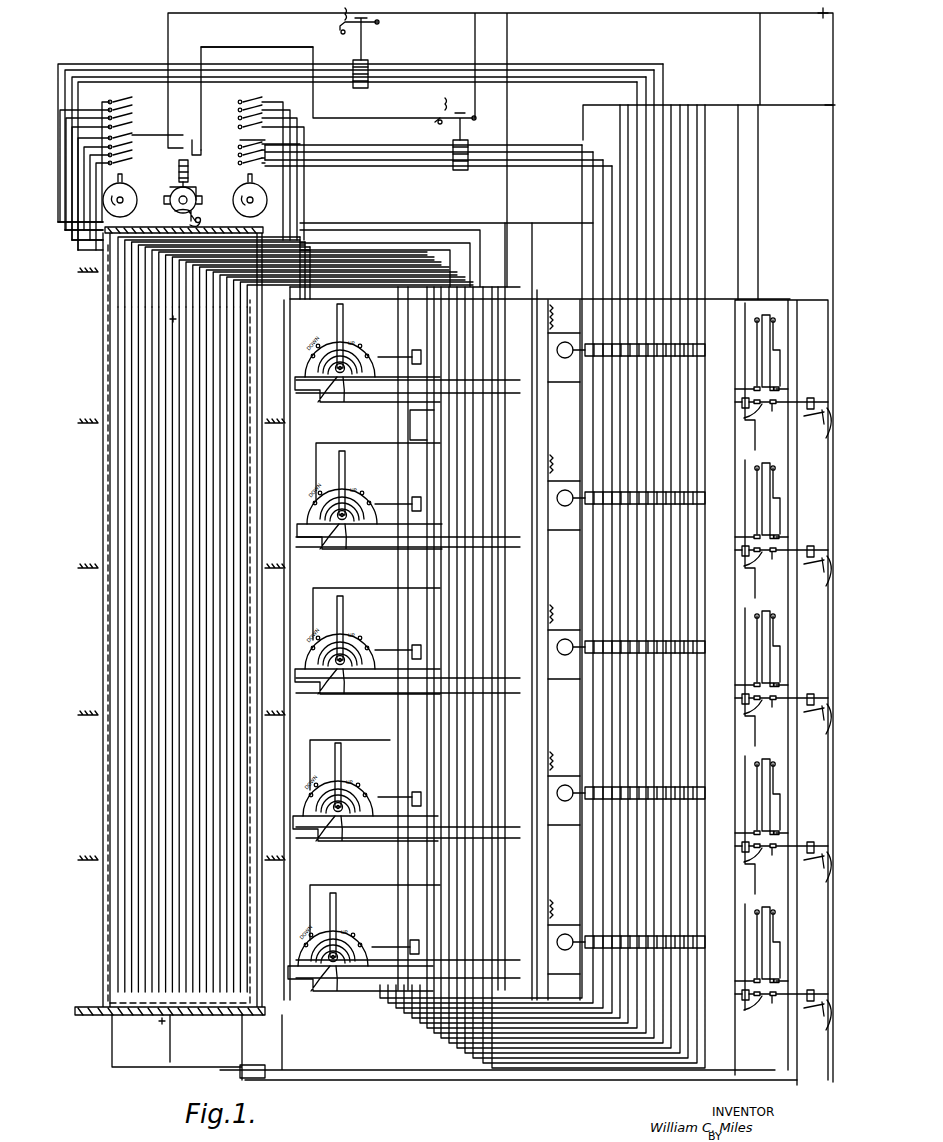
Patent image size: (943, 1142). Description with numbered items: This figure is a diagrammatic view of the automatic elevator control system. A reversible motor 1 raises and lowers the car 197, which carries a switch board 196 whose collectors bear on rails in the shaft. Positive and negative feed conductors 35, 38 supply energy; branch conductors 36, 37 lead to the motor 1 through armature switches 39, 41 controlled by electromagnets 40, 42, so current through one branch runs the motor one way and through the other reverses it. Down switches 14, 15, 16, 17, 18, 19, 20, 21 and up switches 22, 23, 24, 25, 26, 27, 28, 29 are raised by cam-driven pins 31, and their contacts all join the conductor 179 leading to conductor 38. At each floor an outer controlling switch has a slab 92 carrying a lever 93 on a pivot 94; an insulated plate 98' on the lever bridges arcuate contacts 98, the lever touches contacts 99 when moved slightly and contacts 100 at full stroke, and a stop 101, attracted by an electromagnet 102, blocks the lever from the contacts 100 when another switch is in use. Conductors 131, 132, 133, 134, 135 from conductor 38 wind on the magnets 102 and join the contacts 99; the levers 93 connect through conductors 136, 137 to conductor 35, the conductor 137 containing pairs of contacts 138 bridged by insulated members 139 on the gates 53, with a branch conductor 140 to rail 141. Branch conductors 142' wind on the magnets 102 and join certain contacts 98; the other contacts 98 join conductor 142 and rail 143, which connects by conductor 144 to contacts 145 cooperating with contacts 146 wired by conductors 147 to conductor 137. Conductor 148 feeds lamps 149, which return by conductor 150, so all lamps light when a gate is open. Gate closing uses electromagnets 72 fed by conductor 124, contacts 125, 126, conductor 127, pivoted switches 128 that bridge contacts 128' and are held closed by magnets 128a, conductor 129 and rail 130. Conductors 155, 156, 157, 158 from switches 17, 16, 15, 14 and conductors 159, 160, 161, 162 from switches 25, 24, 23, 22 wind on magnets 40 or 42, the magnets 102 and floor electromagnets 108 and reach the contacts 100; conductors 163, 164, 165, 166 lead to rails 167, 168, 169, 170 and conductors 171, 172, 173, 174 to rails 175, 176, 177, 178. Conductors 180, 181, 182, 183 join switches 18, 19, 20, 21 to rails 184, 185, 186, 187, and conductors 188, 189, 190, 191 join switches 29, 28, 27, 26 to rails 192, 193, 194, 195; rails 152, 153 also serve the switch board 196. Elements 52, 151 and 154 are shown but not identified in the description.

The reversible motor 1 is at (170, 208).
The down switch 14 is at (118, 164).
The down switch 15 is at (130, 157).
The down switch 16 is at (130, 149).
The down switch 17 is at (145, 132).
The down switch 18 is at (130, 124).
The down switch 19 is at (130, 115).
The down switch 20 is at (130, 106).
The down switch 21 is at (112, 100).
The up switch 22 is at (240, 166).
The up switch 23 is at (262, 160).
The up switch 24 is at (290, 133).
The up switch 25 is at (238, 140).
The up switch 26 is at (238, 127).
The up switch 27 is at (238, 116).
The up switch 28 is at (260, 106).
The up switch 29 is at (242, 100).
The vertical pin 31 is at (116, 182).
The positive feed conductor 35 is at (614, 13).
The branch conductor 36 is at (168, 31).
The branch conductor 37 is at (262, 48).
The negative feed conductor 38 is at (583, 121).
The armature switch 39 is at (368, 26).
The electromagnet 40 is at (362, 88).
The armature switch 41 is at (444, 114).
The electric magnet 42 is at (460, 170).
The coil 52 is at (183, 160).
The sliding gate 53 is at (768, 348).
The controlling electromagnet 72 is at (740, 408).
The slab 92 is at (322, 352).
The switch lever 93 is at (340, 304).
The pivot 94 is at (344, 380).
The arcuate contact 98 is at (306, 680).
The insulated plate 98' is at (347, 647).
The arcuate contact 99 is at (350, 370).
The contact 100 is at (362, 350).
The stop 101 is at (312, 648).
The electromagnet 102 is at (700, 348).
The electromagnet 108 is at (415, 358).
The conductor 124 is at (740, 181).
The contact 125 is at (727, 735).
The contact 126 is at (768, 715).
The conductor 127 is at (797, 481).
The gate closing switch 128 is at (797, 746).
The electromagnet 128a is at (820, 687).
The contact 128' is at (823, 750).
The conductor 129 is at (833, 211).
The vertical rail 130 is at (243, 768).
The conductor 131 is at (700, 131).
The conductor 132 is at (697, 151).
The conductor 133 is at (688, 175).
The conductor 134 is at (680, 198).
The conductor 135 is at (680, 105).
The conductor 136 is at (276, 739).
The conductor 137 is at (760, 131).
The contact 138 is at (775, 321).
The insulated switch member 139 is at (760, 318).
The branch conductor 140 is at (170, 1040).
The vertical rail 141 is at (170, 990).
The conductor 142 is at (273, 1065).
The branch conductor 142' is at (557, 612).
The rail 143 is at (118, 778).
The conductor 144 is at (292, 300).
The contact 145 is at (775, 388).
The contact 146 is at (752, 389).
The conductor 147 is at (760, 360).
The conductor 148 is at (538, 416).
The lamp 149 is at (565, 358).
The conductor 150 is at (582, 261).
The conductor 151 is at (545, 340).
The rail 152 is at (232, 355).
The rail 153 is at (240, 373).
The conductor 154 is at (507, 116).
The conductor 155 is at (575, 70).
The conductor 156 is at (535, 70).
The conductor 157 is at (616, 77).
The conductor 158 is at (640, 90).
The conductor 159 is at (368, 152).
The conductor 160 is at (405, 152).
The conductor 161 is at (377, 160).
The conductor 162 is at (417, 160).
The conductor 163 is at (498, 808).
The conductor 164 is at (359, 232).
The conductor 165 is at (458, 469).
The conductor 166 is at (483, 357).
The vertical rail 167 is at (131, 328).
The vertical rail 168 is at (145, 340).
The vertical rail 169 is at (160, 350).
The vertical rail 170 is at (172, 428).
The conductor 171 is at (460, 718).
The conductor 172 is at (425, 576).
The conductor 173 is at (425, 424).
The conductor 174 is at (410, 314).
The vertical rail 175 is at (180, 450).
The vertical rail 176 is at (186, 472).
The vertical rail 177 is at (200, 495).
The vertical rail 178 is at (200, 630).
The conductor 179 is at (192, 140).
The conductor 180 is at (89, 263).
The conductor 181 is at (88, 246).
The conductor 182 is at (88, 226).
The conductor 183 is at (88, 208).
The vertical rail 184 is at (120, 318).
The vertical rail 185 is at (138, 385).
The vertical rail 186 is at (131, 400).
The vertical rail 187 is at (125, 600).
The conductor 188 is at (290, 178).
The conductor 189 is at (292, 205).
The conductor 190 is at (306, 213).
The conductor 191 is at (292, 191).
The vertical rail 192 is at (210, 393).
The vertical rail 193 is at (220, 465).
The vertical rail 194 is at (226, 522).
The vertical rail 195 is at (226, 445).
The switch board 196 is at (125, 899).
The car 197 is at (110, 958).